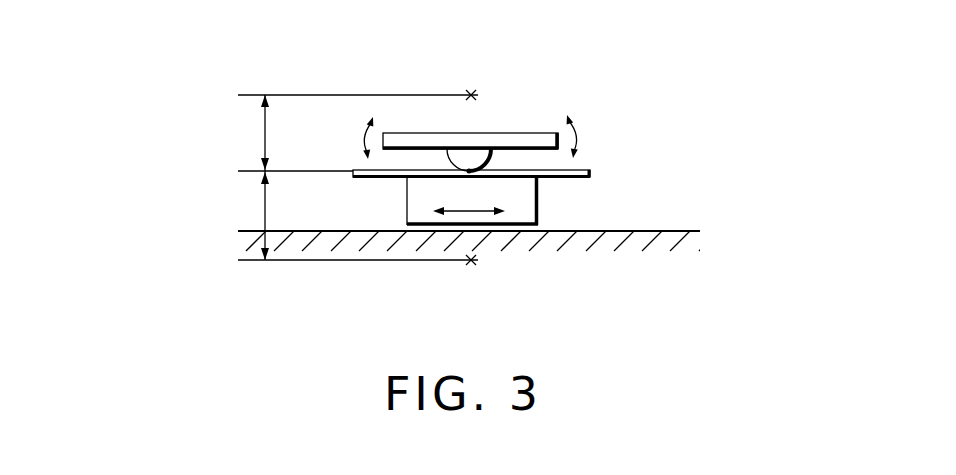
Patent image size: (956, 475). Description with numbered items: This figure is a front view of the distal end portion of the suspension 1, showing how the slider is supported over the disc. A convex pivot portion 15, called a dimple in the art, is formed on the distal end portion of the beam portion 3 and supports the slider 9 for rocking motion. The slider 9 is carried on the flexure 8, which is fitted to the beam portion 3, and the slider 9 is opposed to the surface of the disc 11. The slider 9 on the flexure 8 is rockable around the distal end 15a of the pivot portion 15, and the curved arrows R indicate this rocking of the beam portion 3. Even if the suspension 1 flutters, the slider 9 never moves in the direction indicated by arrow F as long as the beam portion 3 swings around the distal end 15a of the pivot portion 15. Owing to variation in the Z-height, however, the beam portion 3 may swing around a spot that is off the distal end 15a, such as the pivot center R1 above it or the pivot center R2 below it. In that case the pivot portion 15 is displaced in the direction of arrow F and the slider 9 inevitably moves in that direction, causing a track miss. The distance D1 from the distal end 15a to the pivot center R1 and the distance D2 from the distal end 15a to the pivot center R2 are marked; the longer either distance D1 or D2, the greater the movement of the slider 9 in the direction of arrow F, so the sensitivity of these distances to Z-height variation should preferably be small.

The suspension 1 is at (476, 114).
The beam portion 3 is at (543, 133).
The flexure 8 is at (353, 181).
The slider 9 is at (406, 204).
The disc 11 is at (672, 231).
The convex pivot portion 15 is at (521, 151).
The distal end of the pivot portion 15a is at (470, 173).
The rotation direction R is at (362, 138).
The pivot center R1 is at (471, 93).
The pivot center R2 is at (471, 264).
The distance D1 is at (264, 137).
The distance D2 is at (264, 213).
The arrow F is at (487, 224).